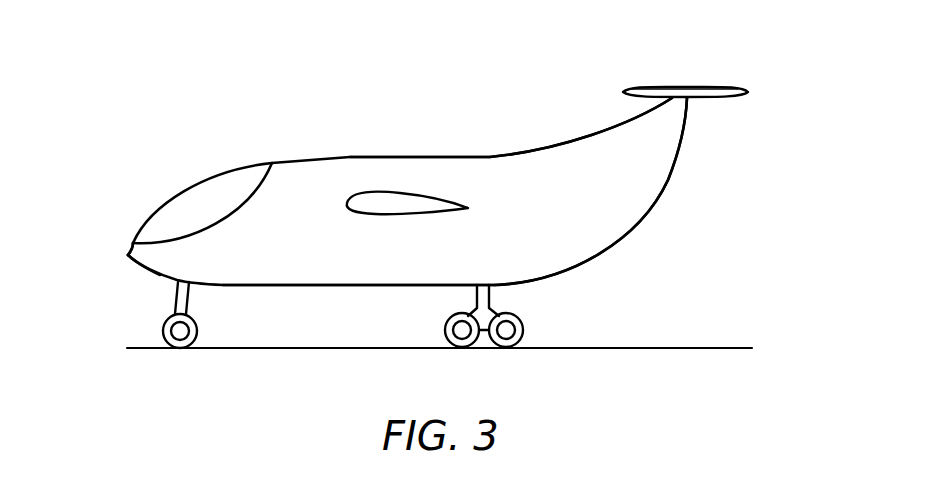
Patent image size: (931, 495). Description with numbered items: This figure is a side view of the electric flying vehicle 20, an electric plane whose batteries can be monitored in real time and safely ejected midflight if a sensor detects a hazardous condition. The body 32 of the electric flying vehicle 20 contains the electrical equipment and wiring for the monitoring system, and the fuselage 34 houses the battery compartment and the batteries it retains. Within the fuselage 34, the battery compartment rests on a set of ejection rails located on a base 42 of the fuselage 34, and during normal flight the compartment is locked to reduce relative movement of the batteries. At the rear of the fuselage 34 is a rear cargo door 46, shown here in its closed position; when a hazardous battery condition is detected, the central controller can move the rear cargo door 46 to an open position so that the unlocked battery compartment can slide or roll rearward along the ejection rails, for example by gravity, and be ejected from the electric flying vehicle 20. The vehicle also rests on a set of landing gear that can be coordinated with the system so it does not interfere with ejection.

The electric flying vehicle 20 is at (472, 117).
The body 32 is at (573, 165).
The fuselage 34 is at (385, 300).
The base 42 is at (130, 259).
The rear cargo door 46 is at (633, 255).